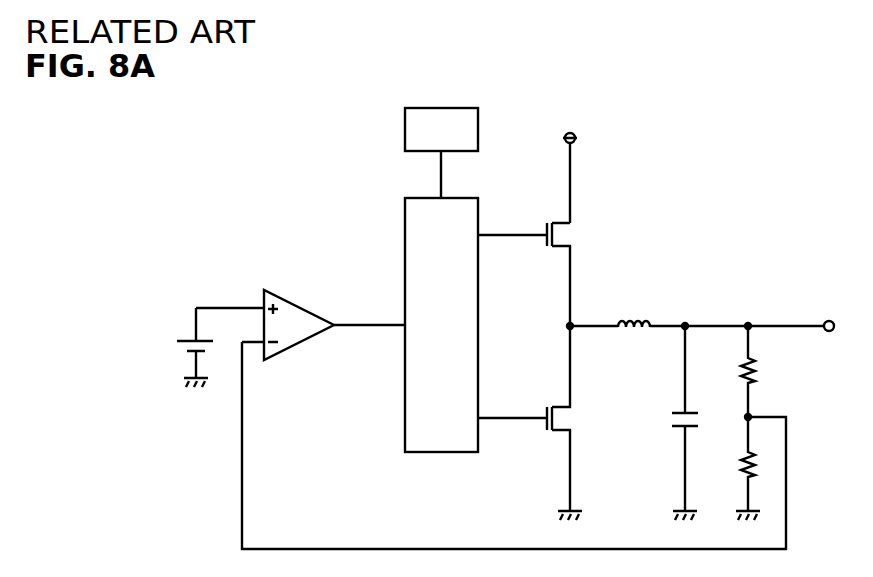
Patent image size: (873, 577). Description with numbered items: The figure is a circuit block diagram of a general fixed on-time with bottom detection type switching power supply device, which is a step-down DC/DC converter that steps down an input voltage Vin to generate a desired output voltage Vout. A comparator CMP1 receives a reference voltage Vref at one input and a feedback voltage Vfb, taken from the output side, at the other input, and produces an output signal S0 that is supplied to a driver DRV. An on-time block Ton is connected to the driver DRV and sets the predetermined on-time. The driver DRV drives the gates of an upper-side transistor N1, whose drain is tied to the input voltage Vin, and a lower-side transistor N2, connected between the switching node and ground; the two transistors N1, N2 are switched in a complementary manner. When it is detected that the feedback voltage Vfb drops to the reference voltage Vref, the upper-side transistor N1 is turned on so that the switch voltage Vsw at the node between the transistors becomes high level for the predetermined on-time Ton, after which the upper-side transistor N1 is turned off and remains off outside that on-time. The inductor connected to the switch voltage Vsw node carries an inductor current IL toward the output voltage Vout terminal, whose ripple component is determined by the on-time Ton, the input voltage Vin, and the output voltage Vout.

The reference voltage Vref is at (220, 337).
The comparator CMP1 is at (295, 300).
The comparator output signal S0 is at (369, 314).
The predetermined on-time Ton is at (441, 153).
The driver circuit DRV is at (441, 325).
The input voltage Vin is at (567, 167).
The upper-side transistor N1 is at (542, 274).
The lower-side transistor N2 is at (542, 423).
The switch voltage Vsw is at (568, 324).
The inductor current IL is at (640, 347).
The output voltage Vout is at (747, 411).
The feedback voltage Vfb is at (514, 445).